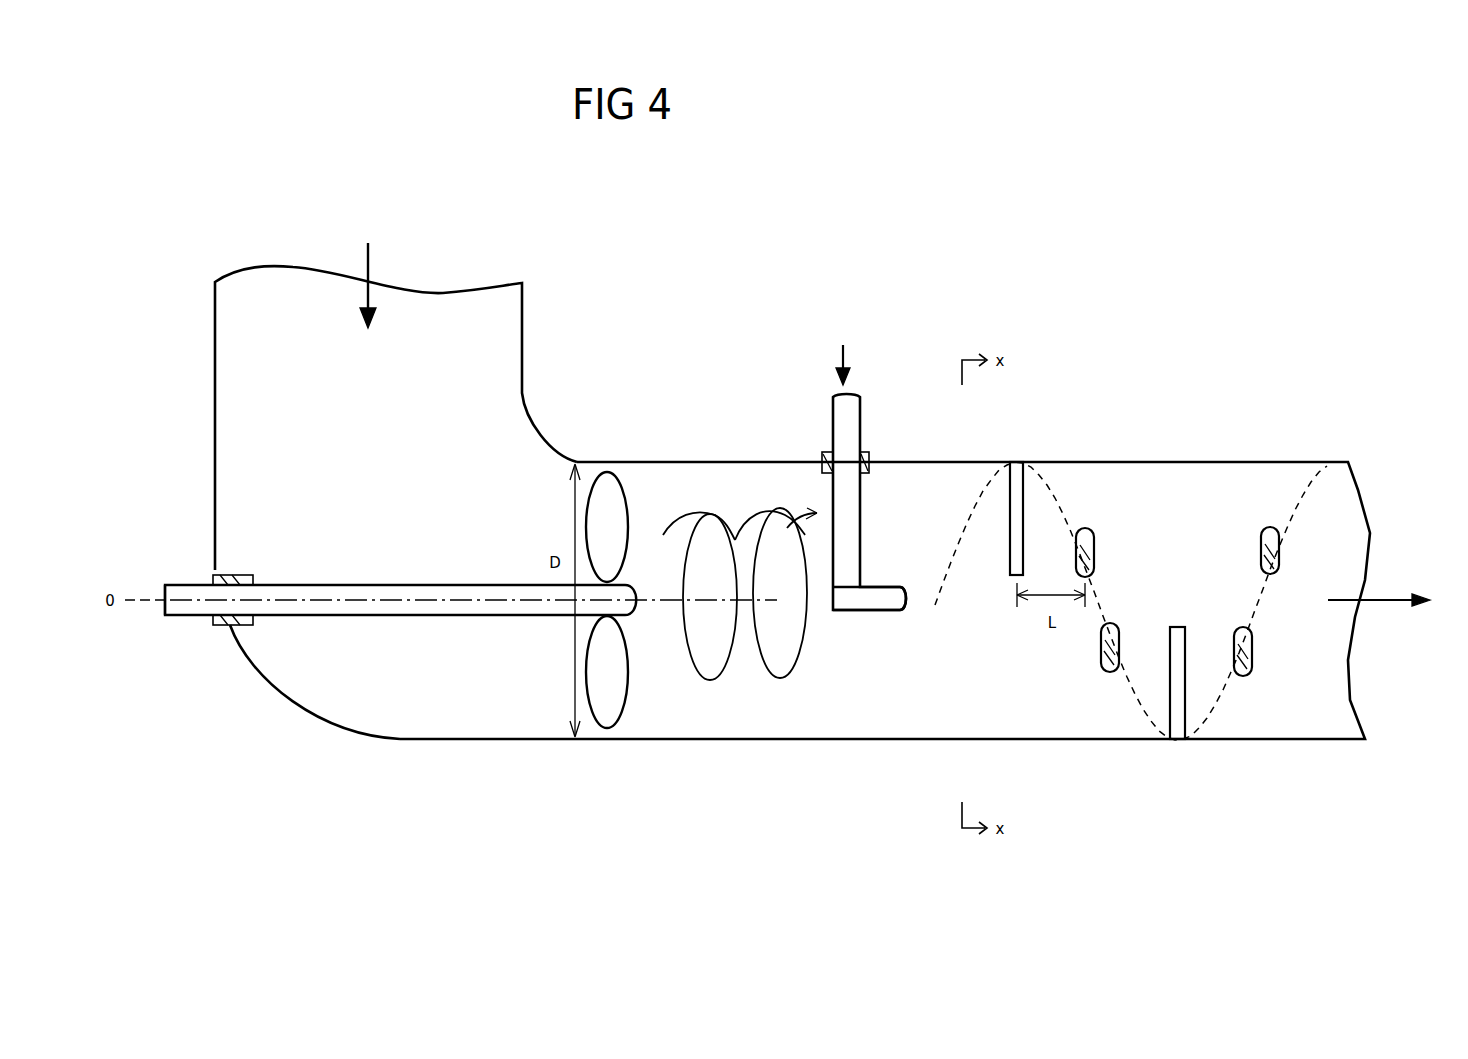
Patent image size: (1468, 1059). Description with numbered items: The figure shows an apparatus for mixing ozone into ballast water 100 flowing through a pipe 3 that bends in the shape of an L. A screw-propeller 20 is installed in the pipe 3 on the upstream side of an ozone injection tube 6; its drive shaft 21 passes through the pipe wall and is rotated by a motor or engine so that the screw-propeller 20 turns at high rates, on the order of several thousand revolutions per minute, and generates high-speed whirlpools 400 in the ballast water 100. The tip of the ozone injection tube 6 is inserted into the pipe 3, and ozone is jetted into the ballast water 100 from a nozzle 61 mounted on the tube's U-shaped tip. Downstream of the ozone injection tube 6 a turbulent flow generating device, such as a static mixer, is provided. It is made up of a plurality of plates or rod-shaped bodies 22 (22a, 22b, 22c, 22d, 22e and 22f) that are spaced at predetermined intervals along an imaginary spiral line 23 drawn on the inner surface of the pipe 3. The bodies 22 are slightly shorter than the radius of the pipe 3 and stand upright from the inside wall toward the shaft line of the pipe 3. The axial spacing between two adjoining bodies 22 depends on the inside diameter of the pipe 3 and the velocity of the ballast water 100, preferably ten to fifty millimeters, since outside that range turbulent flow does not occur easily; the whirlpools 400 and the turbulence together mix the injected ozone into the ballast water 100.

The pipe 3 is at (215, 372).
The ballast water 100 is at (367, 269).
The drive shaft 21 is at (362, 585).
The screw-propeller 20 is at (607, 462).
The high-speed whirlpools 400 is at (700, 510).
The ozone injection tube 6 is at (874, 516).
The nozzle 61 is at (903, 610).
The plates or rod-shaped bodies 22 is at (1227, 605).
The plate or rod-shaped body 22a is at (1027, 461).
The plate or rod-shaped body 22b is at (1093, 545).
The plate or rod-shaped body 22c is at (1105, 655).
The plate or rod-shaped body 22d is at (1165, 740).
The plate or rod-shaped body 22e is at (1253, 655).
The plate or rod-shaped body 22f is at (1310, 548).
The imaginary spiral line 23 is at (1300, 497).